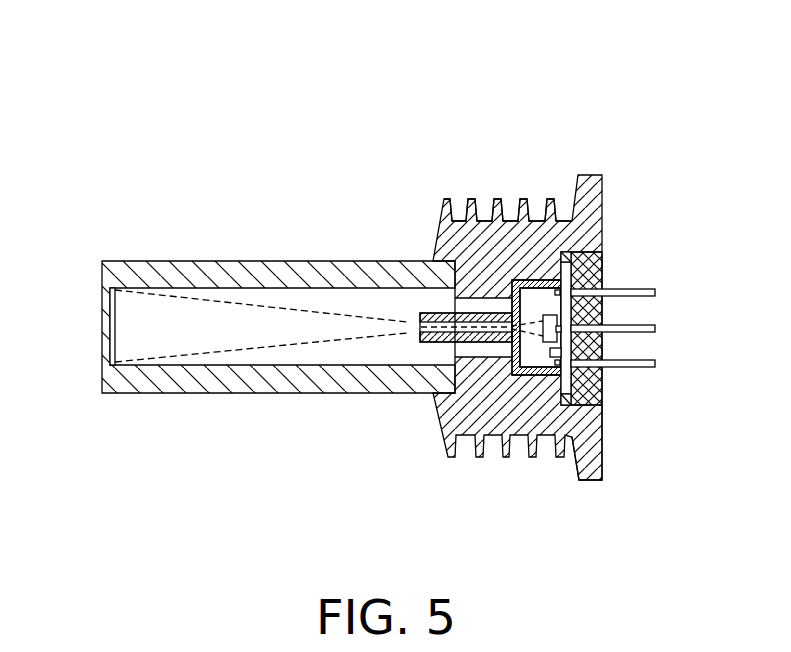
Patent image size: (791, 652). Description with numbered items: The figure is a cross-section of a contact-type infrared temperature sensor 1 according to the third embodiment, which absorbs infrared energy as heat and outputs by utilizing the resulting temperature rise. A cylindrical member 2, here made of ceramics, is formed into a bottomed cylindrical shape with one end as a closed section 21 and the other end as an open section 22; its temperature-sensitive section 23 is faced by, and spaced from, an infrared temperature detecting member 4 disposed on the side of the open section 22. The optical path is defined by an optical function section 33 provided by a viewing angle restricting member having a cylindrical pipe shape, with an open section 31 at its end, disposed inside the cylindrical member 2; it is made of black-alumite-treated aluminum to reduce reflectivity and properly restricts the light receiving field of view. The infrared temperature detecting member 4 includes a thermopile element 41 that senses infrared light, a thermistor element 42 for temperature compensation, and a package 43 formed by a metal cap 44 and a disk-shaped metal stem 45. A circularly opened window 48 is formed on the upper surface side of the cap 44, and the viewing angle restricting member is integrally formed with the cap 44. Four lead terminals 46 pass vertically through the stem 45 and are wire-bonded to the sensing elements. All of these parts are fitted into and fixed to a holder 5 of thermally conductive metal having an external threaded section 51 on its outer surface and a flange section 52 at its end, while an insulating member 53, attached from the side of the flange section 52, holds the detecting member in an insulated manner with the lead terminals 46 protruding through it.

The contact-type infrared temperature sensor 1 is at (242, 124).
The cylindrical member 2 is at (257, 262).
The closed section 21 is at (107, 343).
The open section 22 is at (433, 357).
The temperature-sensitive section 23 is at (107, 298).
The open section 31 is at (407, 326).
The optical function section 33 is at (442, 327).
The infrared temperature detecting member 4 is at (590, 252).
The thermopile element 41 is at (547, 318).
The thermistor element 42 is at (560, 352).
The package 43 is at (540, 302).
The cap 44 is at (512, 282).
The stem 45 is at (568, 378).
The lead terminals 46 is at (633, 290).
The window 48 is at (567, 432).
The holder 5 is at (595, 208).
The external threaded section 51 is at (486, 218).
The flange section 52 is at (595, 460).
The insulating member 53 is at (578, 372).